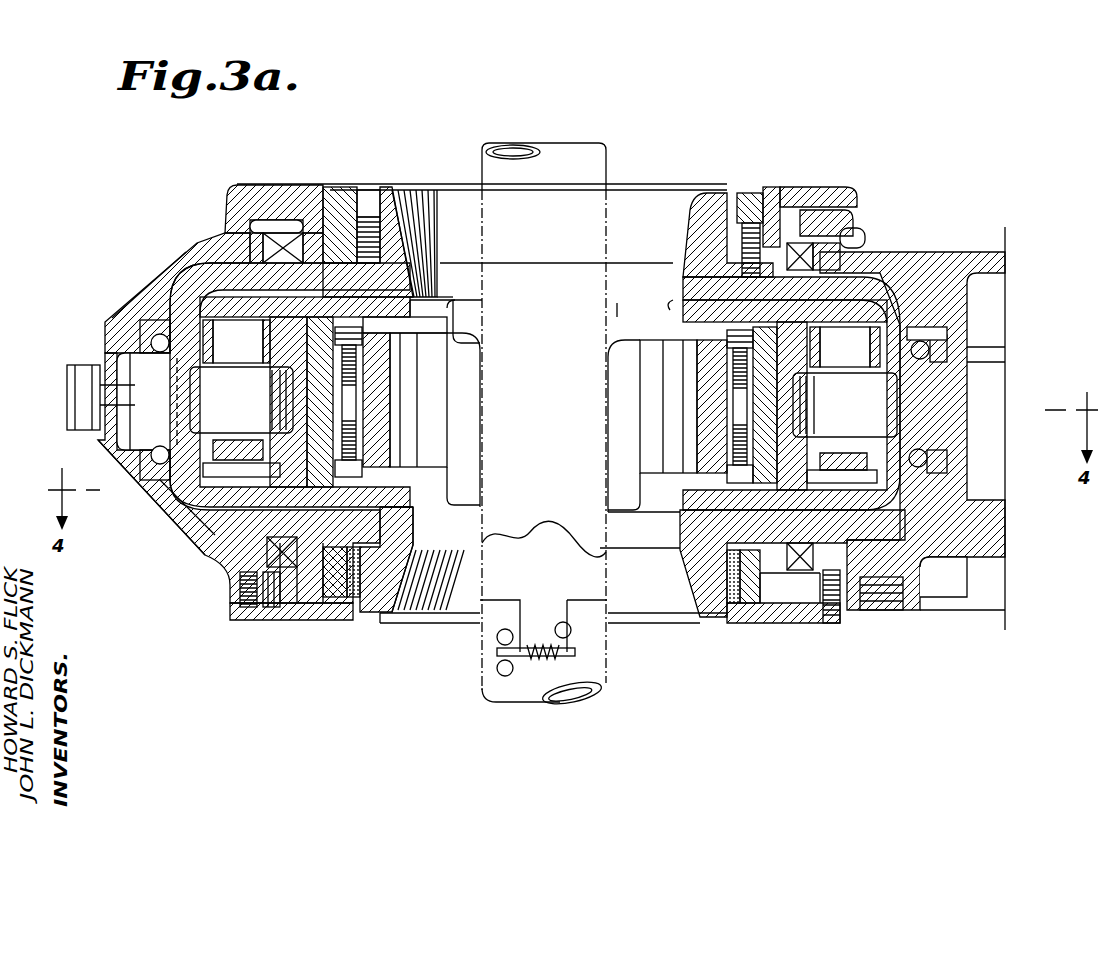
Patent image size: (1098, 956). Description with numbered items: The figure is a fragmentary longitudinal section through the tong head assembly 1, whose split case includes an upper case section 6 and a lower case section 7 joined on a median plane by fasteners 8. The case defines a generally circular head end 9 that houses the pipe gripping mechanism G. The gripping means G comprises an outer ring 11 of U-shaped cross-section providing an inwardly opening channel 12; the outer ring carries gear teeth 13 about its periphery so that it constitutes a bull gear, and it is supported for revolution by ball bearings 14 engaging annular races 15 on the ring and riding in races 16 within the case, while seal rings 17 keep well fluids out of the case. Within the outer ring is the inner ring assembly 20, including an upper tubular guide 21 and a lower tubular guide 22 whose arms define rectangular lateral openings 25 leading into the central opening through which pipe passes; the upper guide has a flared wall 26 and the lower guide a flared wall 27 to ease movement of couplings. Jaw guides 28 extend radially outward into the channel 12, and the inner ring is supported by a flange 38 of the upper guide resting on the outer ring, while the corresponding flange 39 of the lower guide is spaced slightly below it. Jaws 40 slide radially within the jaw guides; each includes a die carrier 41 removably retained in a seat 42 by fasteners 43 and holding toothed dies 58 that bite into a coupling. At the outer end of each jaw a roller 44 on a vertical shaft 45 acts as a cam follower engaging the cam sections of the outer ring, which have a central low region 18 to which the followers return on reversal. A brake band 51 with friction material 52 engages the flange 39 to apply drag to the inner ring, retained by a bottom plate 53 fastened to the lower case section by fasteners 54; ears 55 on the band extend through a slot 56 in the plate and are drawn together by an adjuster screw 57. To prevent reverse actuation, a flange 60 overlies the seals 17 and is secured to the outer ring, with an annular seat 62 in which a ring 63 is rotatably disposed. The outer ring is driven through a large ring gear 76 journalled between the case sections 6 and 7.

The tong head assembly 1 is at (340, 155).
The upper case section 6 is at (950, 263).
The lower case section 7 is at (953, 547).
The fasteners 8 is at (68, 392).
The circular head end 9 is at (165, 520).
The outer ring 11 is at (182, 517).
The channel 12 is at (215, 508).
The gear teeth 13 is at (125, 435).
The ball bearings 14 is at (142, 478).
The annular races 15 is at (165, 447).
The races 16 is at (140, 324).
The seal rings 17 is at (255, 620).
The low region 18 is at (187, 377).
The inner ring assembly 20 is at (403, 207).
The upper tubular guide 21 is at (707, 222).
The lower tubular guide 22 is at (690, 627).
The lateral openings 25 is at (458, 314).
The flared wall 26 is at (630, 207).
The flared wall 27 is at (463, 572).
The jaw guides 28 is at (458, 298).
The flange 38 is at (725, 215).
The flange 39 is at (700, 587).
The jaws 40 is at (203, 290).
The die carrier 41 is at (385, 422).
The seat 42 is at (366, 308).
The fasteners 43 is at (357, 378).
The roller 44 is at (543, 402).
The vertical shaft 45 is at (242, 354).
The brake band 51 is at (333, 595).
The friction material 52 is at (395, 597).
The bottom plate 53 is at (742, 622).
The fasteners 54 is at (253, 623).
The ears 55 is at (557, 667).
The slot 56 is at (577, 635).
The adjuster screw 57 is at (492, 638).
The dies 58 is at (445, 376).
The flange 60 is at (840, 213).
The annular seat 62 is at (820, 192).
The ring 63 is at (760, 203).
The ring gear 76 is at (990, 403).
The pipe gripping mechanism G is at (462, 288).